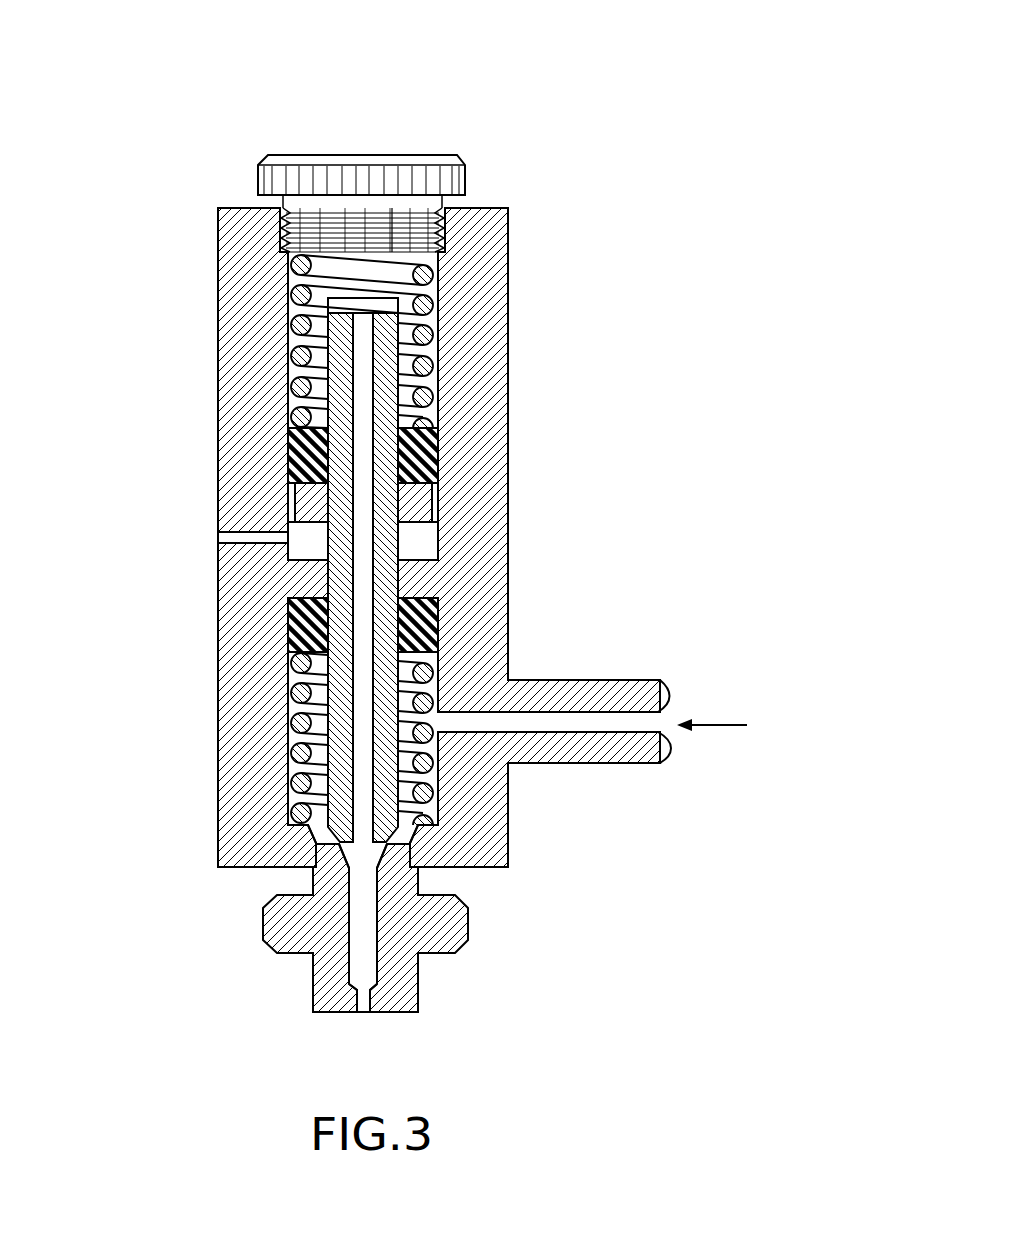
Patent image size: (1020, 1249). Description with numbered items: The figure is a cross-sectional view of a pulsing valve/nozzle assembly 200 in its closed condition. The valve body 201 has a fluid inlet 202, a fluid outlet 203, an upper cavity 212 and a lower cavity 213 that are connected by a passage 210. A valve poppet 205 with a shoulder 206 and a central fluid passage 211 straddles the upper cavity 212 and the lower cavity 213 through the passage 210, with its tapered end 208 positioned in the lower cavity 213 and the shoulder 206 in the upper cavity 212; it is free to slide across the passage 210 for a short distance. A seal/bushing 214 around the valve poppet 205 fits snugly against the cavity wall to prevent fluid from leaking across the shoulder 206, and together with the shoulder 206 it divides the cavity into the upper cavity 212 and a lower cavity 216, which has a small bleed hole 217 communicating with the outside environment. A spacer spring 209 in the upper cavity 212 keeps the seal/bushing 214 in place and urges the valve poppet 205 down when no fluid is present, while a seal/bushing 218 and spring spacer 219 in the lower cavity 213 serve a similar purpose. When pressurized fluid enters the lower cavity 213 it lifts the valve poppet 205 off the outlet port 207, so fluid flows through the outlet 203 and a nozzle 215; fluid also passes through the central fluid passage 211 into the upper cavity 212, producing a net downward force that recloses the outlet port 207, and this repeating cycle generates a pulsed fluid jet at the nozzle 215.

The pulsing valve/nozzle assembly 200 is at (528, 120).
The valve body 201 is at (495, 233).
The fluid inlet 202 is at (680, 713).
The fluid outlet 203 is at (284, 937).
The valve poppet 205 is at (342, 708).
The shoulder 206 is at (300, 507).
The outlet port 207 is at (396, 833).
The tapered end 208 is at (318, 843).
The spacer spring 209 is at (300, 320).
The passage 210 is at (331, 178).
The central fluid passage 211 is at (368, 351).
The upper cavity 212 is at (390, 257).
The lower cavity 213 is at (433, 775).
The seal/bushing 214 is at (410, 456).
The nozzle 215 is at (360, 1013).
The lower cavity 216 is at (425, 540).
The bleed hole 217 is at (235, 538).
The seal/bushing 218 is at (410, 627).
The spring spacer 219 is at (302, 663).